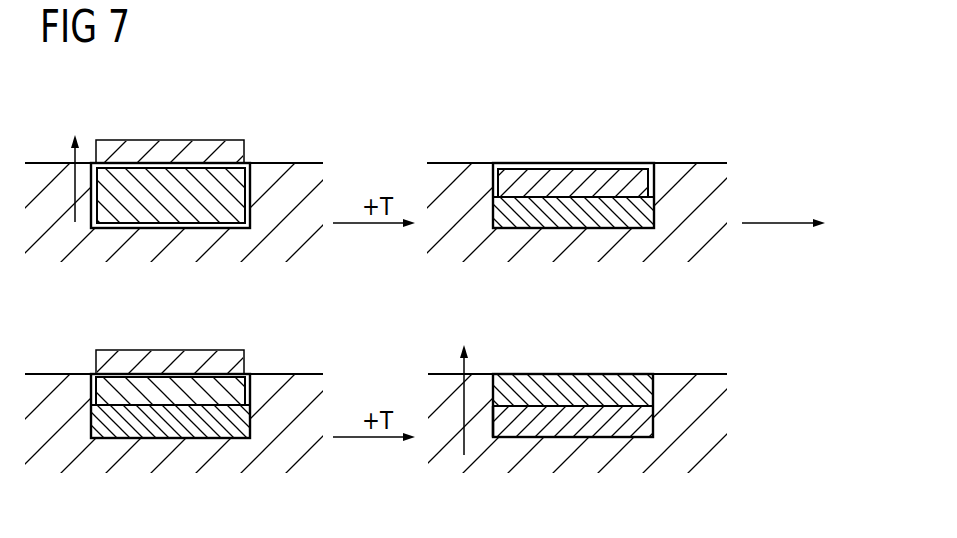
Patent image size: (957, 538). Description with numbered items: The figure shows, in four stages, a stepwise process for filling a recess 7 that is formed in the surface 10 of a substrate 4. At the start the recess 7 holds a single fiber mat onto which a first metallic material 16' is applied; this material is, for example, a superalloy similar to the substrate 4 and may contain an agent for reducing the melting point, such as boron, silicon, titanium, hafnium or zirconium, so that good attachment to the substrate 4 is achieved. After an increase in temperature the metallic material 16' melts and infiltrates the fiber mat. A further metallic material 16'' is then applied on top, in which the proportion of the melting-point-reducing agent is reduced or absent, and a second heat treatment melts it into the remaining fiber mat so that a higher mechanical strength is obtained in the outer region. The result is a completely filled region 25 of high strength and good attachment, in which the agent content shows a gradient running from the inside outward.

The substrate 4 is at (302, 179).
The recess 7 is at (254, 161).
The surface 10 is at (38, 160).
The metallic material 16' is at (170, 116).
The metallic material 16'' is at (170, 332).
The region 25 is at (517, 425).